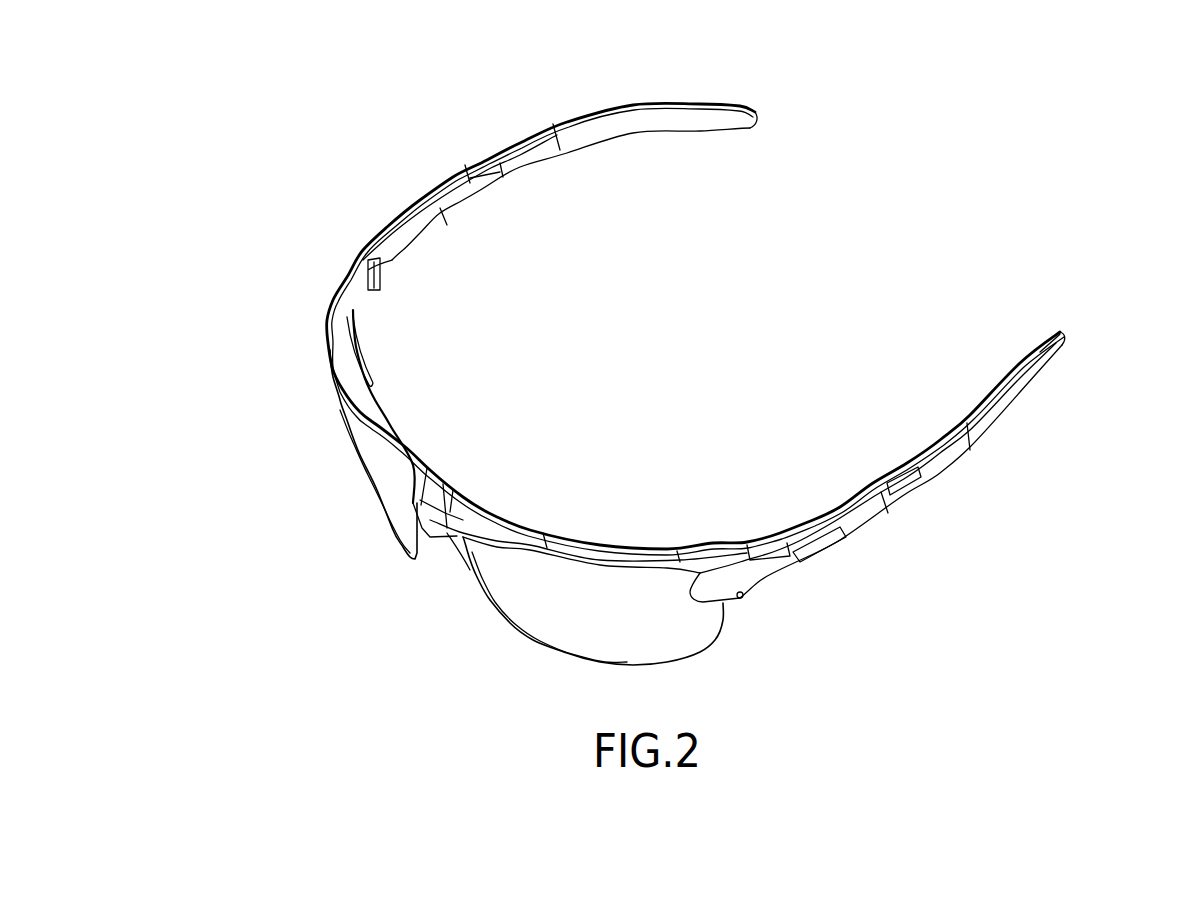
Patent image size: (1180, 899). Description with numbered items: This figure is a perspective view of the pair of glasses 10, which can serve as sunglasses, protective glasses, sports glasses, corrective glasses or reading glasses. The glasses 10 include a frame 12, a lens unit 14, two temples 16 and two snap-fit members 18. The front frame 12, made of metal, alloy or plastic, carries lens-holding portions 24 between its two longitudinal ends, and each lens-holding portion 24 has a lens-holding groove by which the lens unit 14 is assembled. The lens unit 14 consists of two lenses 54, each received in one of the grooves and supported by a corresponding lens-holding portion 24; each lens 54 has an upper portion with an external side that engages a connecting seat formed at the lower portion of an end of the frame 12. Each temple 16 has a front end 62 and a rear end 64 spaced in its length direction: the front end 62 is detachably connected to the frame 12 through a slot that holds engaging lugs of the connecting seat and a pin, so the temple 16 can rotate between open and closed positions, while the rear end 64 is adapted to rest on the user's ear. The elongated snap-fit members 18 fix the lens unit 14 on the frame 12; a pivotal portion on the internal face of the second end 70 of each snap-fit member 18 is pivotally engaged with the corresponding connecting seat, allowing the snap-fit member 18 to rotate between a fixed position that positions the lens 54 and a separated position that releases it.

The glasses 10 is at (296, 150).
The frame 12 is at (413, 480).
The lens unit 14 is at (480, 640).
The temple 16 is at (530, 133).
The snap-fit member 18 is at (748, 592).
The lens-holding portion 24 is at (371, 373).
The lens 54 is at (373, 470).
The front end 62 is at (758, 549).
The rear end 64 is at (1064, 347).
The second end 70 is at (808, 563).